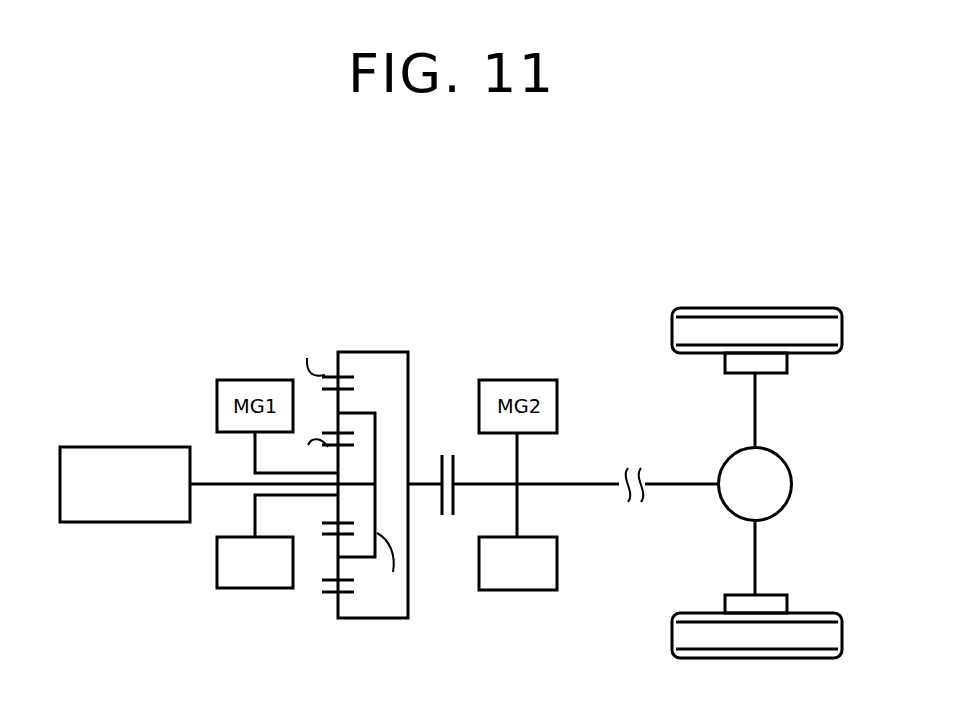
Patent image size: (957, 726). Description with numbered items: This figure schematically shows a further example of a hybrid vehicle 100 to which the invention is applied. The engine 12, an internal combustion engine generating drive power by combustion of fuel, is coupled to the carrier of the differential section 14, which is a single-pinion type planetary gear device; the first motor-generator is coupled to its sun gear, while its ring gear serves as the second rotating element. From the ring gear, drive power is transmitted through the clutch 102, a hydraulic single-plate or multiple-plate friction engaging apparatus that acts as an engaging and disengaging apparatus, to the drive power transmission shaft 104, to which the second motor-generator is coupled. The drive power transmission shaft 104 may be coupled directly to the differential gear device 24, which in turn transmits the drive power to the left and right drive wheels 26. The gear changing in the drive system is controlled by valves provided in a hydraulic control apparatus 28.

The engine 12 is at (115, 460).
The differential section 14 is at (333, 322).
The hybrid vehicle 100 is at (648, 258).
The clutch 102 is at (445, 440).
The drive power transmission shaft 104 is at (597, 488).
The differential gear device 24 is at (765, 465).
The drive wheels 26 is at (757, 645).
The hydraulic control apparatus 28 is at (770, 323).